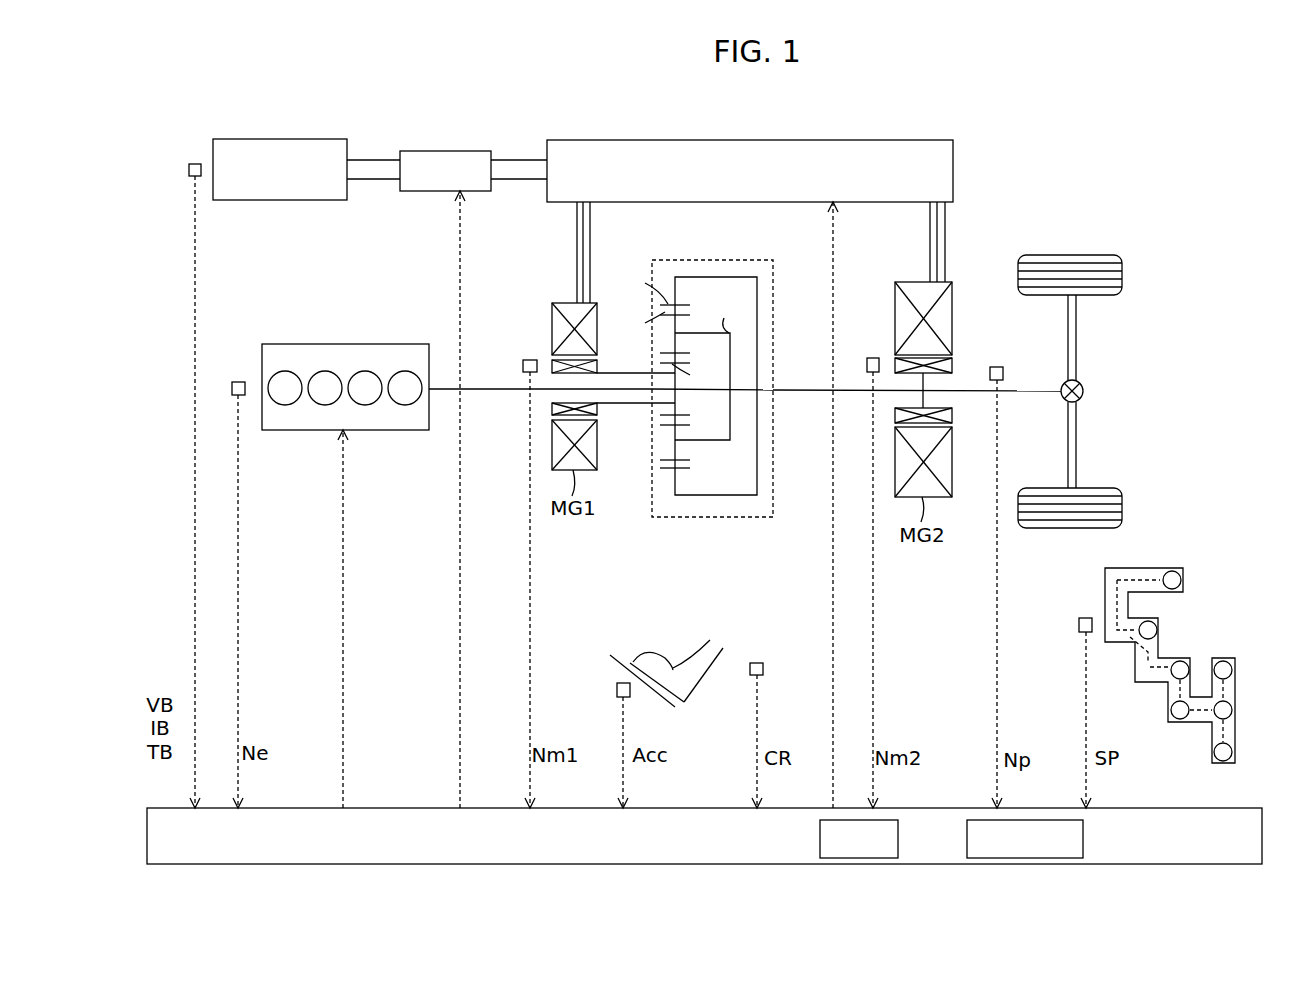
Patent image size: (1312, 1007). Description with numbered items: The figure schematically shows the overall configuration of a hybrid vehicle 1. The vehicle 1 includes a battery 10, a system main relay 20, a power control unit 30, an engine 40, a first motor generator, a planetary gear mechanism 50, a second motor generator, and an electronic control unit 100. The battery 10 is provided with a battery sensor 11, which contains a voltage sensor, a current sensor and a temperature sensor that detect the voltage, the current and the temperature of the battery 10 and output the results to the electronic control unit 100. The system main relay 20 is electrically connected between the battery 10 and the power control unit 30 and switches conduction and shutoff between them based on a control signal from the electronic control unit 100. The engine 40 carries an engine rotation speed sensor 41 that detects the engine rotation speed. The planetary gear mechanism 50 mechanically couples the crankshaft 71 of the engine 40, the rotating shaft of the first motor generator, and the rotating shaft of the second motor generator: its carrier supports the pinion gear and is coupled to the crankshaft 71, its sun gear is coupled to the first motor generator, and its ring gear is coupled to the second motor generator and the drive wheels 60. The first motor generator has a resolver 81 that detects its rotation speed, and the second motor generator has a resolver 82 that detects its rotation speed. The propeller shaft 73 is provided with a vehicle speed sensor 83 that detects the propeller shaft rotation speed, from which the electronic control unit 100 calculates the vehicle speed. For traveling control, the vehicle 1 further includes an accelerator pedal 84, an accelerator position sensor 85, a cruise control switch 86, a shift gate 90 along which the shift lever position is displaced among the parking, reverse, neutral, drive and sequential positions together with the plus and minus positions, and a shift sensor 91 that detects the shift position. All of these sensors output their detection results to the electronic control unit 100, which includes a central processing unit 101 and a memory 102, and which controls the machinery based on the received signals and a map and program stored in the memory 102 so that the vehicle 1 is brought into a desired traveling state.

The vehicle 1 is at (1103, 142).
The battery 10 is at (313, 139).
The battery sensor 11 is at (191, 164).
The system main relay (SMR) 20 is at (455, 151).
The power control unit (PCU) 30 is at (884, 140).
The engine 40 is at (395, 344).
The engine rotation speed sensor 41 is at (238, 382).
The planetary gear mechanism 50 is at (745, 262).
The drive wheels 60 is at (1085, 255).
The crankshaft 71 is at (491, 392).
The propeller shaft 73 is at (1025, 393).
The resolver 81 is at (530, 360).
The resolver 82 is at (873, 358).
The vehicle speed sensor 83 is at (1003, 372).
The accelerator pedal 84 is at (622, 655).
The accelerator position sensor 85 is at (617, 690).
The cruise control switch 86 is at (756, 663).
The shift gate 90 is at (1150, 568).
The shift sensor 91 is at (1085, 618).
The electronic control unit (ECU) 100 is at (1258, 808).
The central processing unit (CPU) 101 is at (898, 842).
The memory 102 is at (1083, 843).